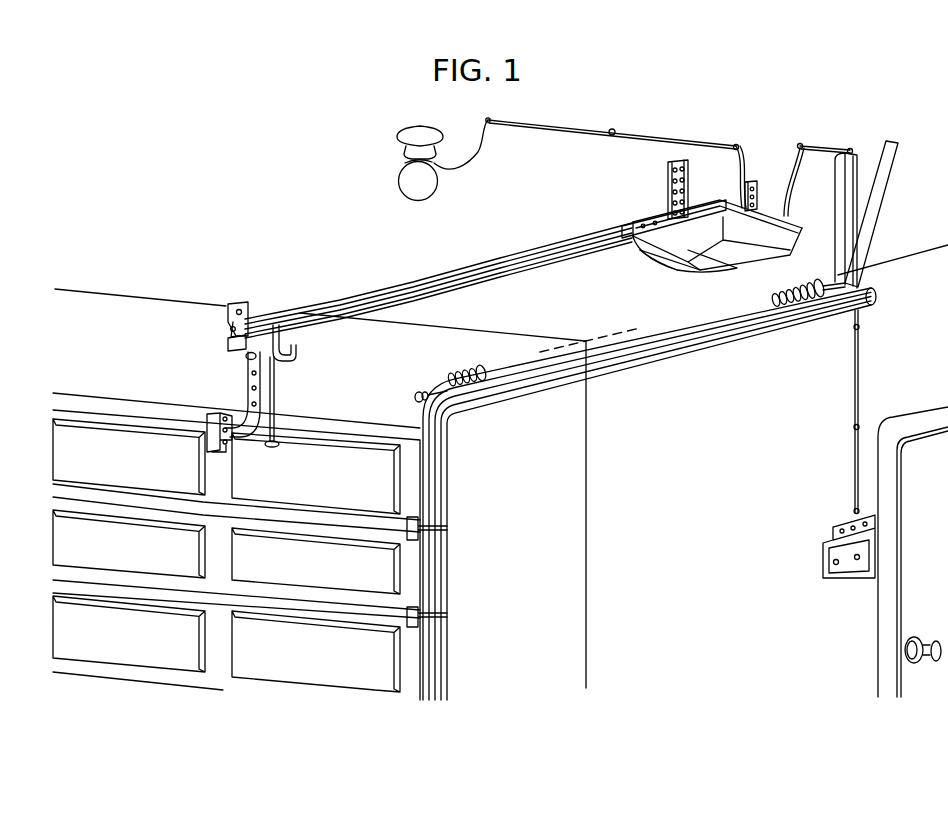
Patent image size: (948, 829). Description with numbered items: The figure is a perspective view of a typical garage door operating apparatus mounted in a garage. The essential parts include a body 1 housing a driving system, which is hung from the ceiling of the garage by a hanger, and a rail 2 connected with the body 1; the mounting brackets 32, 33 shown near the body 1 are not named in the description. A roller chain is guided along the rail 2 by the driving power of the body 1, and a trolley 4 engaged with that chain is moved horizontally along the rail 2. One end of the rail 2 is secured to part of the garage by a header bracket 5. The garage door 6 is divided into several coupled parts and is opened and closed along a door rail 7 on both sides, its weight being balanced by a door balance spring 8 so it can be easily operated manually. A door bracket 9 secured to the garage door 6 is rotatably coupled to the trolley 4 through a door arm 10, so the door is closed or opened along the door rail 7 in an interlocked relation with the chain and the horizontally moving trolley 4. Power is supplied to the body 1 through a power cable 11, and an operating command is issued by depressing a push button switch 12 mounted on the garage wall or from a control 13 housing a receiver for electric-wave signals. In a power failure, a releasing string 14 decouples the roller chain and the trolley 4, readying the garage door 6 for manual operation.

The body 1 is at (695, 228).
The rail 2 is at (413, 281).
The trolley 4 is at (292, 346).
The header bracket 5 is at (228, 310).
The garage door 6 is at (373, 434).
The door rail 7 is at (606, 372).
The door balance spring 8 is at (801, 290).
The door bracket 9 is at (207, 442).
The door arm 10 is at (246, 384).
The power cable 11 is at (670, 138).
The push button switch 12 is at (836, 567).
The control 13 is at (816, 567).
The releasing string 14 is at (274, 450).
The mounting bracket 32 is at (640, 222).
The hanger strap 33 is at (655, 217).